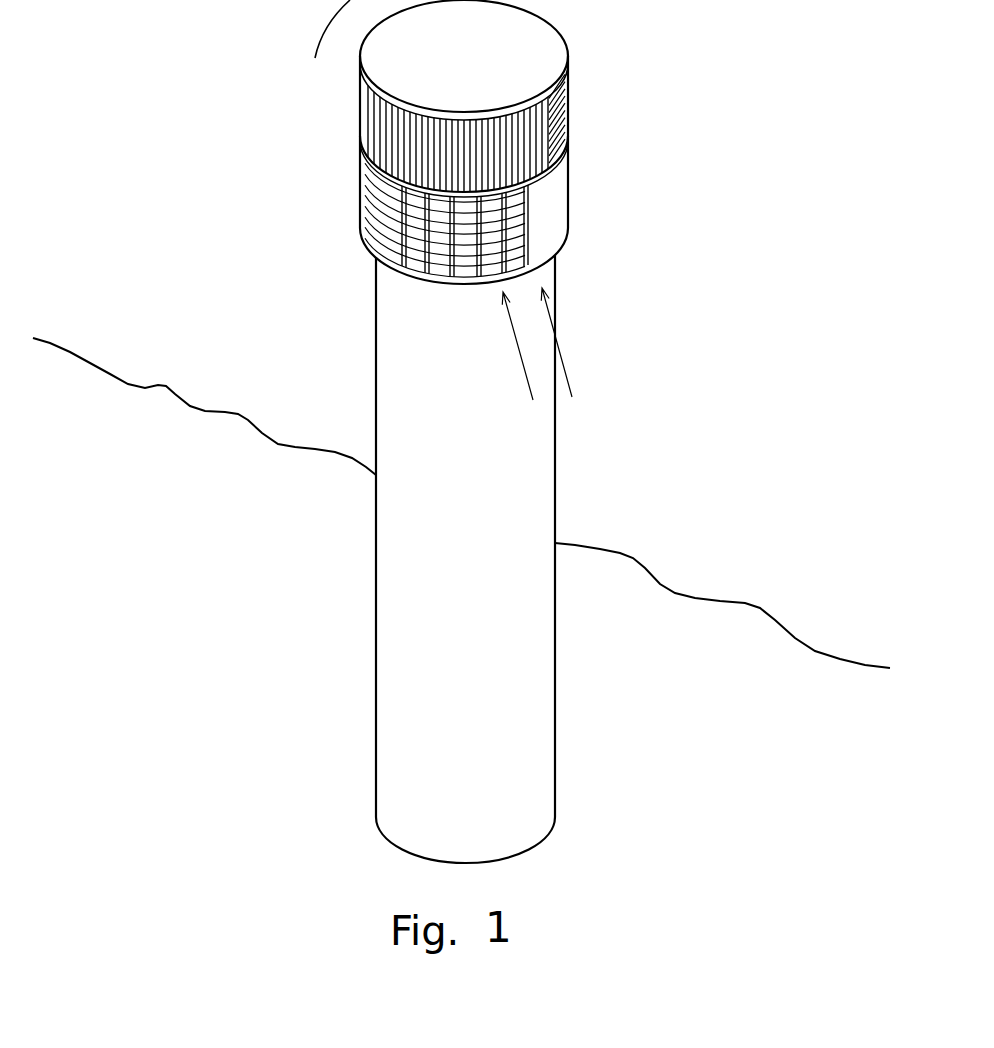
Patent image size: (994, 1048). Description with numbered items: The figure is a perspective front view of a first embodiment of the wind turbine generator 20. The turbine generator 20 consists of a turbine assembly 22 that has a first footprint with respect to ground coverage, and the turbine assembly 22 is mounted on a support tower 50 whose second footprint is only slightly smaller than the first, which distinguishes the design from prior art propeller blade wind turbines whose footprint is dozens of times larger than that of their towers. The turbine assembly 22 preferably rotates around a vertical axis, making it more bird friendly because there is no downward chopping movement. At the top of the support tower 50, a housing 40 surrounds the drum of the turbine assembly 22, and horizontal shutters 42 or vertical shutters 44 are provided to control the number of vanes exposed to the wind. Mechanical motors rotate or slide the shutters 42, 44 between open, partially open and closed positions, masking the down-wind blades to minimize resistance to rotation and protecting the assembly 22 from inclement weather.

The wind turbine generator 20 is at (313, 287).
The turbine assembly 22 is at (572, 143).
The housing 40 is at (488, 77).
The horizontal shutters 42 is at (410, 233).
The vertical shutters 44 is at (412, 150).
The support tower 50 is at (373, 632).